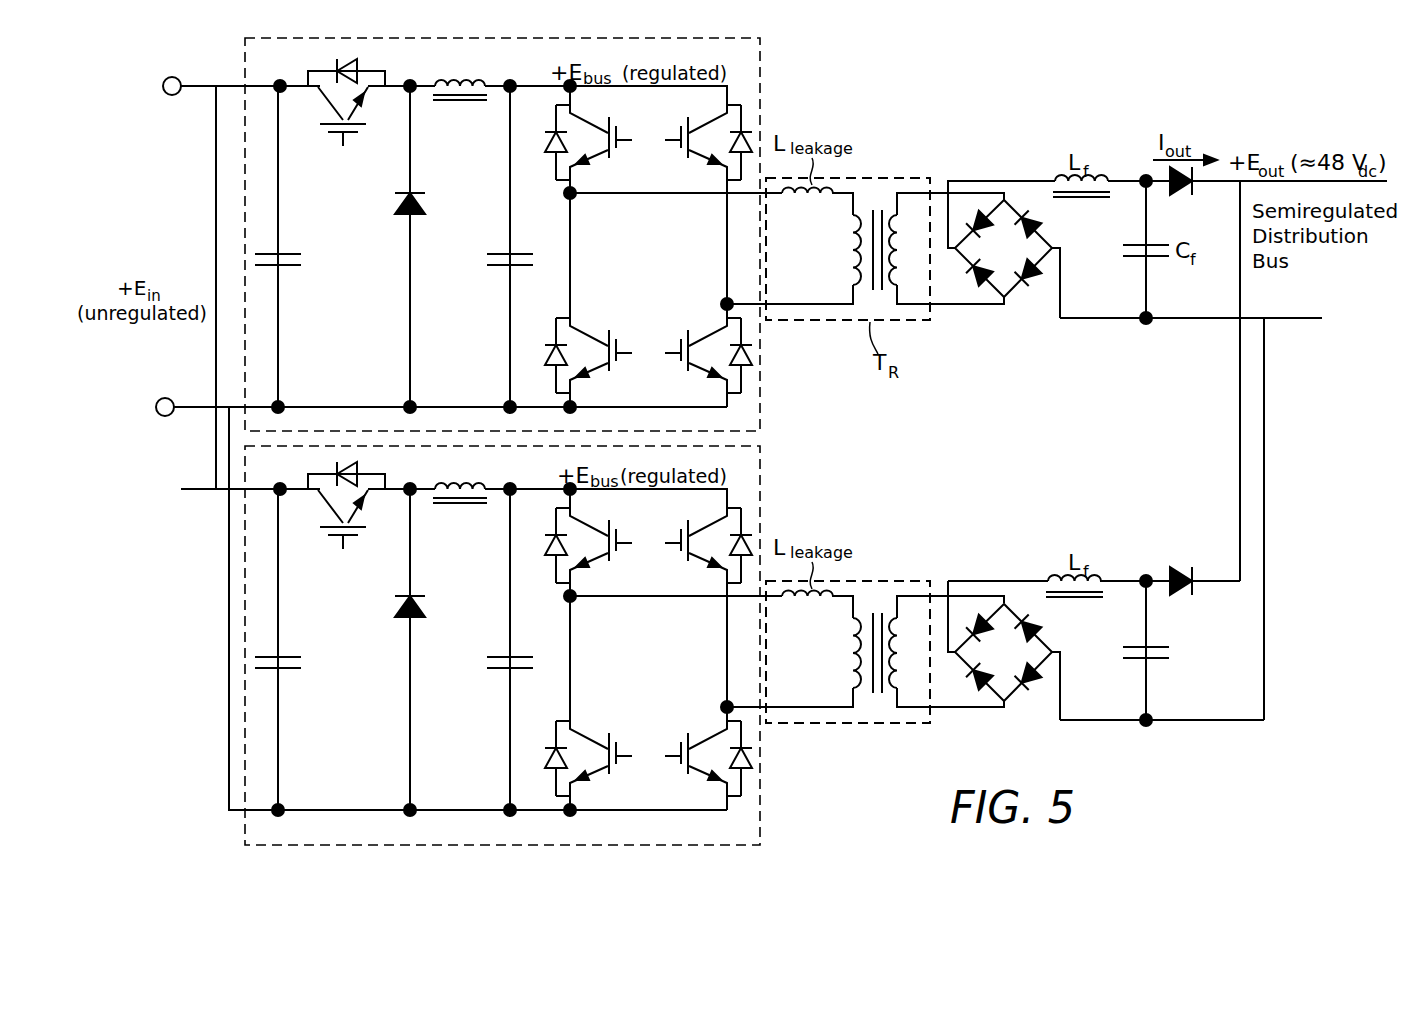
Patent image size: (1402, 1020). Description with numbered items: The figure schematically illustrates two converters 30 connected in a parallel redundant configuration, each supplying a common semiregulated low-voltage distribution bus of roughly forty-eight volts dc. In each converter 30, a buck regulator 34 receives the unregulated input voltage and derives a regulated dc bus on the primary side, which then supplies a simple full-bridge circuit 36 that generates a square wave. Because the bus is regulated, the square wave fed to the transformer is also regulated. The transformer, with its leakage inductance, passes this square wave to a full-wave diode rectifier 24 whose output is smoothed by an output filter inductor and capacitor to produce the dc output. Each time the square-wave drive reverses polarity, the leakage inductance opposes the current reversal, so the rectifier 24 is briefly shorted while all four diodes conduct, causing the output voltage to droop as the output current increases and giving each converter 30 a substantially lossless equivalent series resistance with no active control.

The full-wave diode rectifier 24 is at (1028, 312).
The converter 30 is at (502, 50).
The buck regulator 34 is at (413, 73).
The full-bridge circuit 36 is at (745, 76).